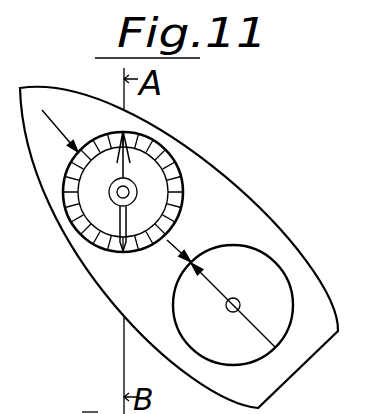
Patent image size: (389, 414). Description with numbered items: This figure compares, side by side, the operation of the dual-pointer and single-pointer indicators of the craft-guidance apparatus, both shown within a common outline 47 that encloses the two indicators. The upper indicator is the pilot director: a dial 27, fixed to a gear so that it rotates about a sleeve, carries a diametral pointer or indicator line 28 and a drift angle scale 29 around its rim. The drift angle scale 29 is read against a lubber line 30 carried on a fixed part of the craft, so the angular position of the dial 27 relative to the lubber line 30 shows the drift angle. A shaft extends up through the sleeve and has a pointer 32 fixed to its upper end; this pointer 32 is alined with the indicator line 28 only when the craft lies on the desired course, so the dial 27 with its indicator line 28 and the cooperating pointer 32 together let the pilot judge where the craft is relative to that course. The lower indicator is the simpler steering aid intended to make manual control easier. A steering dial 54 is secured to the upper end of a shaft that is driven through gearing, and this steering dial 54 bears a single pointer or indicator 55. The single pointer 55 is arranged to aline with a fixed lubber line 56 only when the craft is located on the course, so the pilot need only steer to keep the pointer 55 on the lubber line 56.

The dial 27 is at (184, 198).
The diametral pointer or indicator line 28 is at (119, 168).
The drift angle scale 29 is at (78, 158).
The lubber line 30 is at (50, 119).
The pointer 32 is at (119, 214).
The housing 47 is at (297, 373).
The steering dial 54 is at (186, 300).
The single pointer or indicator 55 is at (251, 323).
The fixed lubber line 56 is at (191, 262).